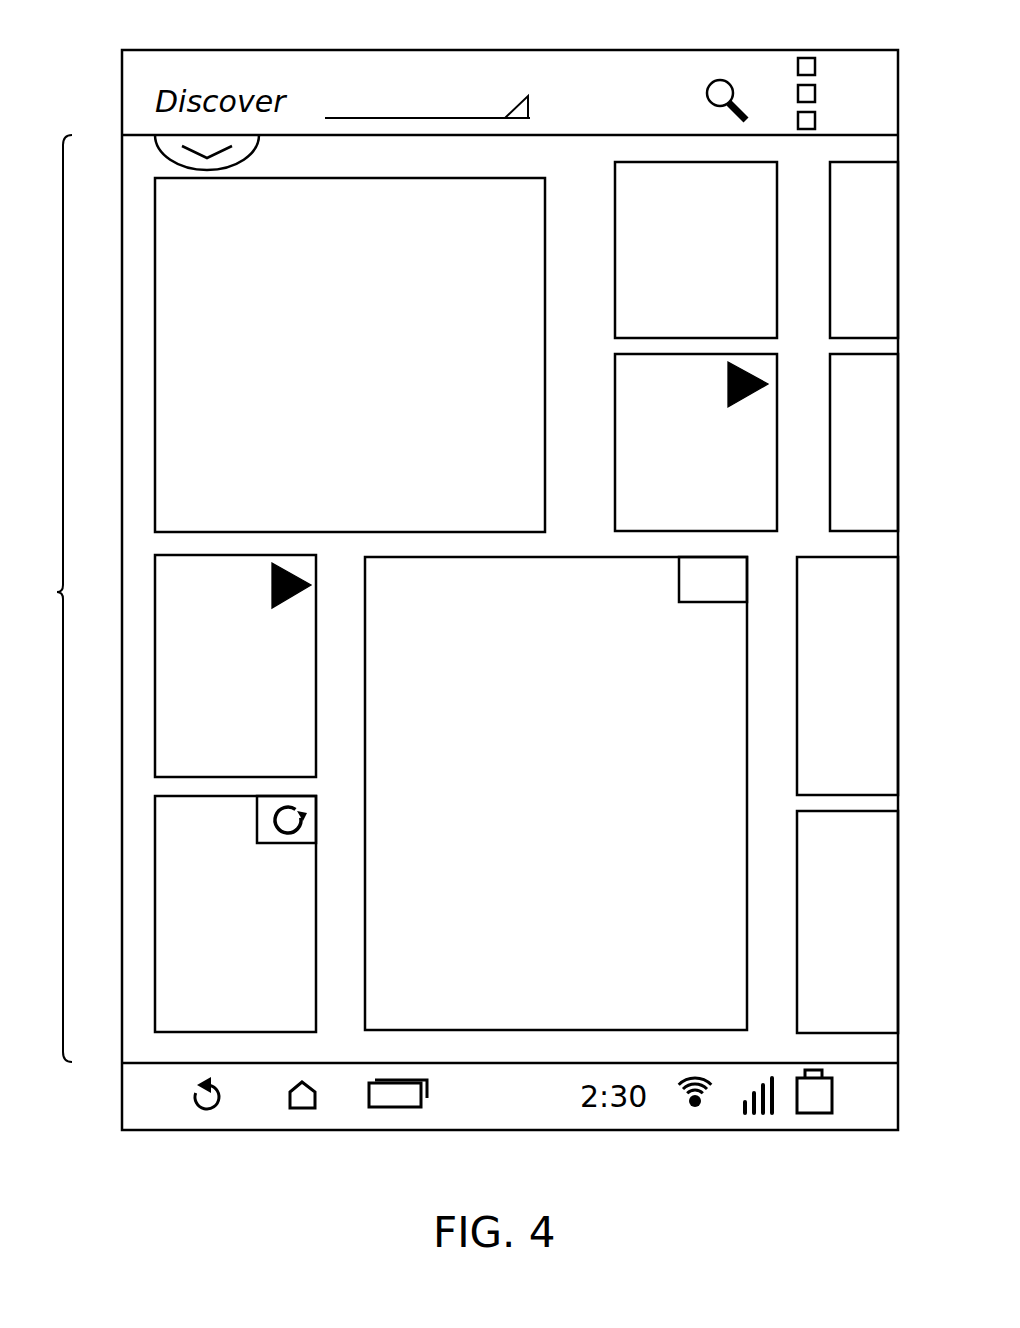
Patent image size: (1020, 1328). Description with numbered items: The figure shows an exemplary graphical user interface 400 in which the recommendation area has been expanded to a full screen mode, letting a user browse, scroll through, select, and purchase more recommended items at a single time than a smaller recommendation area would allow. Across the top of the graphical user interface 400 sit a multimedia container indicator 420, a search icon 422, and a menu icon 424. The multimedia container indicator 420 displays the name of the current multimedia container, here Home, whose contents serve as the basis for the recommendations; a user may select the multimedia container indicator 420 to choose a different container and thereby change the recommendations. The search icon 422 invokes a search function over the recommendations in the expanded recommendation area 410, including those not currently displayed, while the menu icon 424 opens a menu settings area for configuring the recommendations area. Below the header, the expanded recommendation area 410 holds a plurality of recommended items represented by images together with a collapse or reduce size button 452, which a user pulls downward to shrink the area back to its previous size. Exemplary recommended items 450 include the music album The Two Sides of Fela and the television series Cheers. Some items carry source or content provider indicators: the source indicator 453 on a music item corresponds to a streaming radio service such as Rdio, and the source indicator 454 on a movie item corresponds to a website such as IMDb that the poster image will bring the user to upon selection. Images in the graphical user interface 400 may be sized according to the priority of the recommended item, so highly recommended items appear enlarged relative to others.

The exemplary graphical user interface 400 is at (88, 113).
The expanded recommendation area 410 is at (48, 604).
The multimedia container indicator 420 is at (416, 66).
The search icon 422 is at (716, 66).
The menu icon 424 is at (806, 46).
The recommended items 450 is at (642, 386).
The collapse or reduce size button 452 is at (146, 154).
The source indicator 453 is at (246, 818).
The source indicator 454 is at (668, 579).